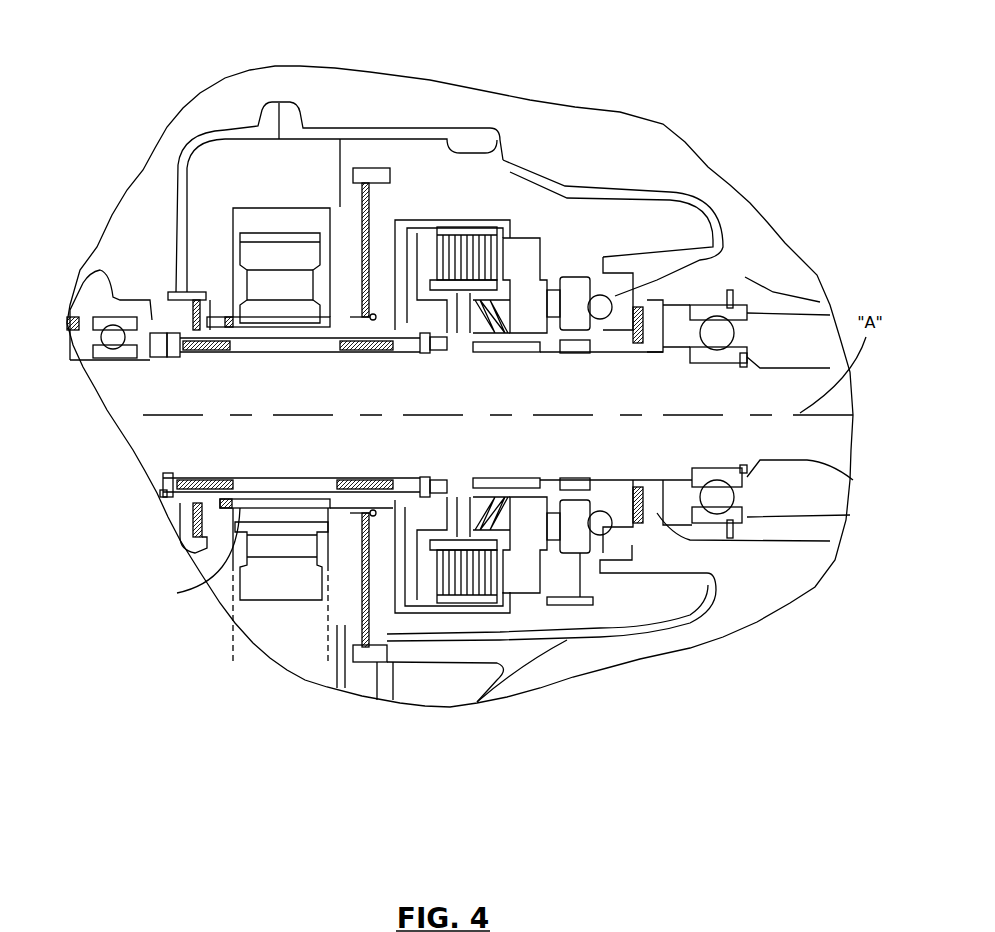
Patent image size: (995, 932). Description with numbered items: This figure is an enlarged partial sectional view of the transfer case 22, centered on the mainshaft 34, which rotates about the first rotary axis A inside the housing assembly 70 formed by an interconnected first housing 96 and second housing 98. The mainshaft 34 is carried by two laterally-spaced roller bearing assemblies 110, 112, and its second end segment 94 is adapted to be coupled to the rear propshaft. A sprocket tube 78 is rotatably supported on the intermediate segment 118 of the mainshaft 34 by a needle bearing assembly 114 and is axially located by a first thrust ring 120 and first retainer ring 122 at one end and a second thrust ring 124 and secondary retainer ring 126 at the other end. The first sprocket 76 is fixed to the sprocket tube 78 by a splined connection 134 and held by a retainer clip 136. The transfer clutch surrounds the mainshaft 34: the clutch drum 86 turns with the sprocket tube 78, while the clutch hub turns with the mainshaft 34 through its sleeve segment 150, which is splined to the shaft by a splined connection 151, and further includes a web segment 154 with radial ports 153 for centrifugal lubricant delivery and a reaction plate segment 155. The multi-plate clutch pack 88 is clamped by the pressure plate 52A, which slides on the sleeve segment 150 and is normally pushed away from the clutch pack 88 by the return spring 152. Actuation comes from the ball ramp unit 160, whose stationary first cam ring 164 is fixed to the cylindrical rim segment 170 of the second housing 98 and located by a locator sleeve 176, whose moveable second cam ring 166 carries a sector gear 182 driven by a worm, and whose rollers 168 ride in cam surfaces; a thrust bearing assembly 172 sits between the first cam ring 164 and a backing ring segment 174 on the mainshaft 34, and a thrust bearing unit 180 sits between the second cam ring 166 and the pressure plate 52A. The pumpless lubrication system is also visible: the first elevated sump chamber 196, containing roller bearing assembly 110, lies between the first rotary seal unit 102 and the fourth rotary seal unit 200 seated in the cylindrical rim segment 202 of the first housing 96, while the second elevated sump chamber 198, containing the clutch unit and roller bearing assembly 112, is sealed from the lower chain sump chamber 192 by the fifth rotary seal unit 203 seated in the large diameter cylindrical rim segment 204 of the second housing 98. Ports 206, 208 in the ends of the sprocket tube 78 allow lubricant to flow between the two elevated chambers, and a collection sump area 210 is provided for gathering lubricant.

The transfer case 22 is at (716, 63).
The mainshaft 34 is at (168, 440).
The pressure plate 52A is at (523, 247).
The housing assembly 70 is at (240, 110).
The first sprocket 76 is at (265, 590).
The sprocket tube 78 is at (267, 496).
The clutch drum 86 is at (420, 612).
The multi-plate clutch pack 88 is at (471, 224).
The second end segment 94 is at (842, 481).
The first housing 96 is at (198, 132).
The second housing 98 is at (520, 673).
The first rotary seal unit 102 is at (69, 323).
The roller bearing assembly 110 is at (107, 283).
The roller bearing assembly 112 is at (730, 333).
The needle bearing assembly 114 is at (353, 354).
The intermediate segment 118 is at (256, 399).
The first thrust ring 120 is at (160, 358).
The first retainer ring 122 is at (157, 349).
The second thrust ring 124 is at (425, 354).
The secondary retainer ring 126 is at (436, 350).
The splined connection 134 is at (297, 500).
The retainer clip 136 is at (191, 557).
The sleeve segment 150 is at (517, 346).
The splined connection 151 is at (537, 480).
The return spring 152 is at (481, 499).
The radial ports 153 is at (503, 354).
The web segment 154 is at (424, 493).
The reaction plate segment 155 is at (427, 588).
The ball ramp unit 160 is at (618, 220).
The first cam ring 164 is at (640, 290).
The second cam ring 166 is at (573, 275).
The rollers 168 is at (620, 244).
The cylindrical rim segment 170 is at (673, 560).
The thrust bearing assembly 172 is at (640, 480).
The backing ring segment 174 is at (830, 541).
The locator sleeve 176 is at (593, 348).
The thrust bearing unit 180 is at (562, 523).
The sector gear 182 is at (577, 607).
The chain sump chamber 192 is at (347, 678).
The first elevated sump chamber 196 is at (168, 290).
The second elevated sump chamber 198 is at (407, 207).
The fourth rotary seal unit 200 is at (193, 521).
The cylindrical rim segment 202 is at (197, 286).
The fifth rotary seal unit 203 is at (350, 220).
The large diameter cylindrical rim segment 204 is at (433, 648).
The port 206 is at (163, 497).
The port 208 is at (427, 493).
The collection sump area 210 is at (448, 156).